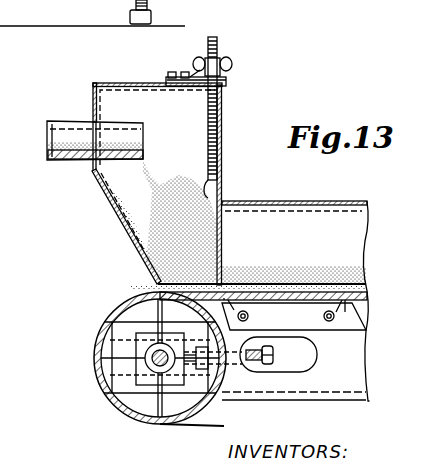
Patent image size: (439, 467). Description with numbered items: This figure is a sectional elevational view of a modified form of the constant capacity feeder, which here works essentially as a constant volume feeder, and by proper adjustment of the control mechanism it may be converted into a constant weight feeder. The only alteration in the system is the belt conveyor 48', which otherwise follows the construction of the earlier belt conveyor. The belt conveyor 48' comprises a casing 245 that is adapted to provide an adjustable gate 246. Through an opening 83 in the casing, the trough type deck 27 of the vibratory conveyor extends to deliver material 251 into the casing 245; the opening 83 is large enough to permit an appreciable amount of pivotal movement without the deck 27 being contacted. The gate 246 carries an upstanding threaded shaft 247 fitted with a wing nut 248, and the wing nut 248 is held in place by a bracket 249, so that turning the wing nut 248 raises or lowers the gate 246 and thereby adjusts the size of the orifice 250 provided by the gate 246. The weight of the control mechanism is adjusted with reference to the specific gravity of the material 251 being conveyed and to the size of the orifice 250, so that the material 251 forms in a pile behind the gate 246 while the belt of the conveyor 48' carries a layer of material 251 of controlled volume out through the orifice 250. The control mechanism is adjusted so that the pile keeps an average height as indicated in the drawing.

The trough type deck 27 is at (137, 134).
The opening 83 is at (93, 120).
The casing 245 is at (245, 139).
The adjustable gate 246 is at (223, 221).
The upstanding threaded shaft 247 is at (218, 44).
The wing nut 248 is at (226, 62).
The bracket 249 is at (193, 76).
The orifice 250 is at (223, 276).
The material 251 is at (178, 222).
The belt conveyor 48' is at (228, 379).